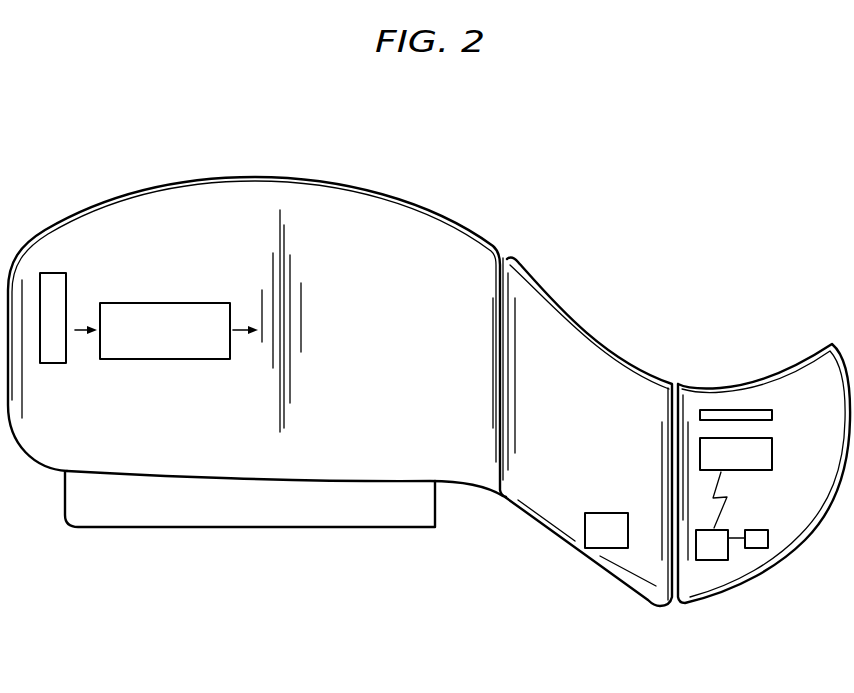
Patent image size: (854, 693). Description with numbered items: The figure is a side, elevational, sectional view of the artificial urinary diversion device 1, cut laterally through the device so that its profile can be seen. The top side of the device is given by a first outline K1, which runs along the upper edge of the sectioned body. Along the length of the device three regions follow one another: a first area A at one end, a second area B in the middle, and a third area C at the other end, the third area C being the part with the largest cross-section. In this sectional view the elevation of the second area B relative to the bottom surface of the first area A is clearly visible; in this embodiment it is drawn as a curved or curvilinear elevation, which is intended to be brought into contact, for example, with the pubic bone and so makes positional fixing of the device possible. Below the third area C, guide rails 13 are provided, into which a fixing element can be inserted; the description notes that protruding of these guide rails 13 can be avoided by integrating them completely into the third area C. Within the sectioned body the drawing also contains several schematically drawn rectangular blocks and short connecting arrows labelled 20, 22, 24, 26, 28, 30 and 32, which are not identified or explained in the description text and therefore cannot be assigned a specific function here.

The urinary diversion device 1 is at (429, 384).
The first outline K1 is at (429, 384).
The guide rails 13 is at (440, 508).
The processing unit 20 is at (157, 360).
The display / module 22 is at (773, 453).
The display strip 24 is at (774, 415).
The module 26 is at (702, 560).
The module 28 is at (765, 548).
The module 30 is at (603, 511).
The interface unit 32 is at (66, 285).
The first area A is at (766, 378).
The second area B is at (580, 337).
The third area C is at (251, 176).